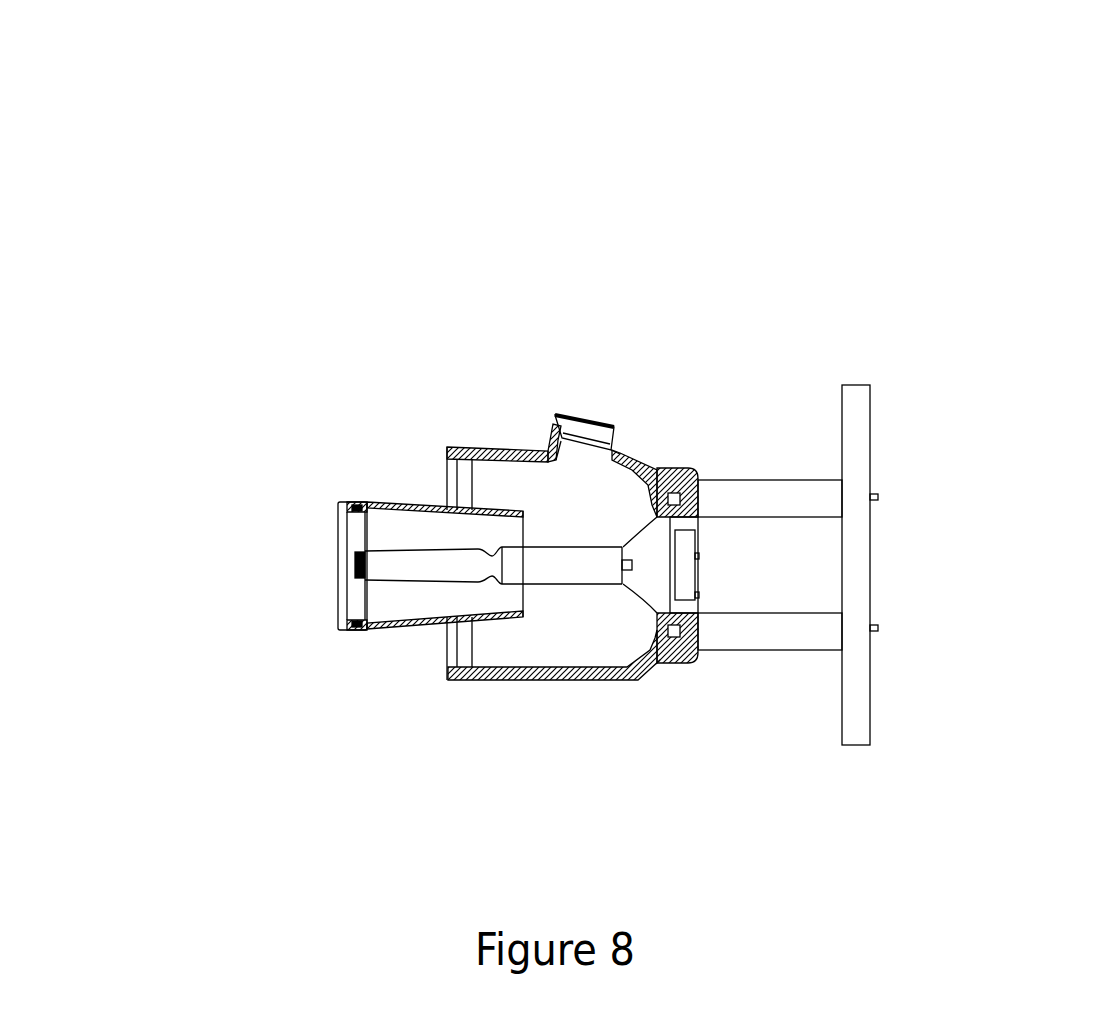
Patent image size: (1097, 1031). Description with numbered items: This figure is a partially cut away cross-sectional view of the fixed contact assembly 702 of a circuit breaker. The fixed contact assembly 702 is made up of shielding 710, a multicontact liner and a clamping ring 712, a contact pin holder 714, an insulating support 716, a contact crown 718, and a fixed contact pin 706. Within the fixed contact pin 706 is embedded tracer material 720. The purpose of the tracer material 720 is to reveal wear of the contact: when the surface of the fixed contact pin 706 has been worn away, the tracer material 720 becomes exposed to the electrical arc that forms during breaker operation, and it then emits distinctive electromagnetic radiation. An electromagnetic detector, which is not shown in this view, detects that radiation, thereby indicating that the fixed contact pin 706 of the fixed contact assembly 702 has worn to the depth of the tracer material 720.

The fixed contact assembly 702 is at (330, 230).
The fixed contact pin 706 is at (386, 560).
The shielding 710 is at (347, 502).
The clamping ring 712 is at (583, 417).
The contact pin holder 714 is at (643, 557).
The insulating support 716 is at (735, 497).
The contact crown 718 is at (337, 623).
The tracer material 720 is at (355, 565).